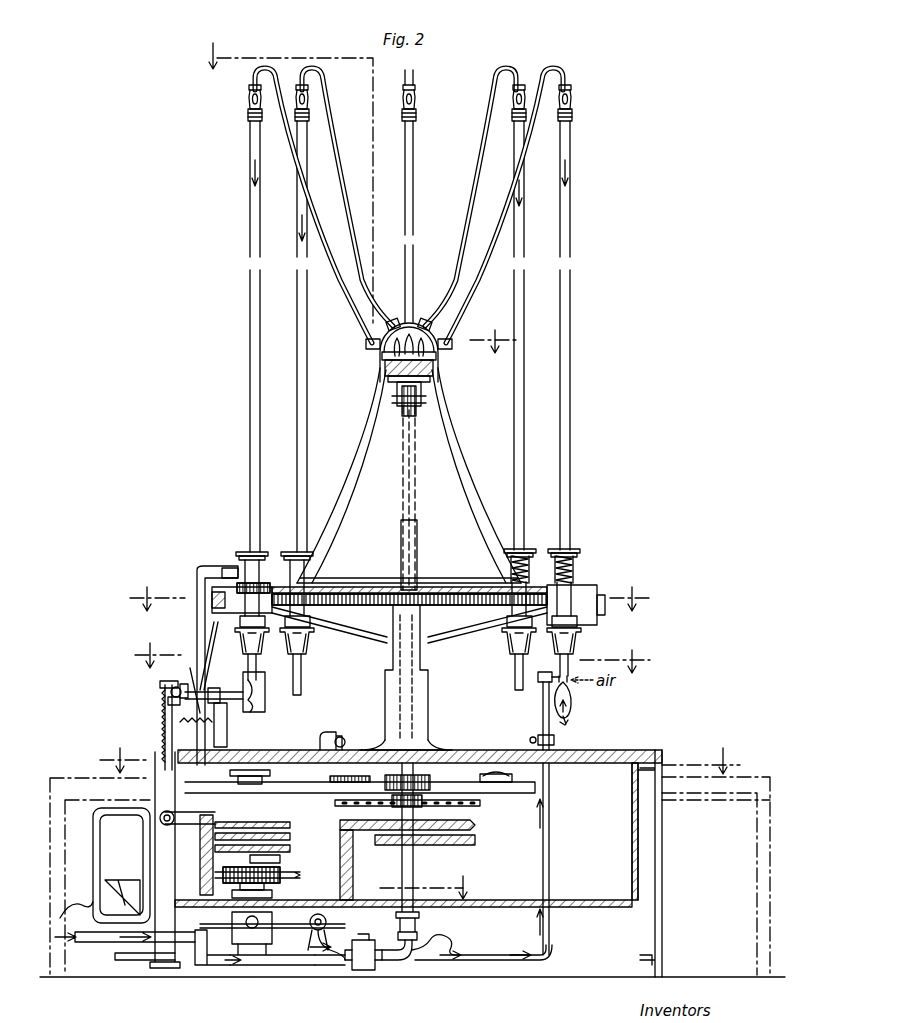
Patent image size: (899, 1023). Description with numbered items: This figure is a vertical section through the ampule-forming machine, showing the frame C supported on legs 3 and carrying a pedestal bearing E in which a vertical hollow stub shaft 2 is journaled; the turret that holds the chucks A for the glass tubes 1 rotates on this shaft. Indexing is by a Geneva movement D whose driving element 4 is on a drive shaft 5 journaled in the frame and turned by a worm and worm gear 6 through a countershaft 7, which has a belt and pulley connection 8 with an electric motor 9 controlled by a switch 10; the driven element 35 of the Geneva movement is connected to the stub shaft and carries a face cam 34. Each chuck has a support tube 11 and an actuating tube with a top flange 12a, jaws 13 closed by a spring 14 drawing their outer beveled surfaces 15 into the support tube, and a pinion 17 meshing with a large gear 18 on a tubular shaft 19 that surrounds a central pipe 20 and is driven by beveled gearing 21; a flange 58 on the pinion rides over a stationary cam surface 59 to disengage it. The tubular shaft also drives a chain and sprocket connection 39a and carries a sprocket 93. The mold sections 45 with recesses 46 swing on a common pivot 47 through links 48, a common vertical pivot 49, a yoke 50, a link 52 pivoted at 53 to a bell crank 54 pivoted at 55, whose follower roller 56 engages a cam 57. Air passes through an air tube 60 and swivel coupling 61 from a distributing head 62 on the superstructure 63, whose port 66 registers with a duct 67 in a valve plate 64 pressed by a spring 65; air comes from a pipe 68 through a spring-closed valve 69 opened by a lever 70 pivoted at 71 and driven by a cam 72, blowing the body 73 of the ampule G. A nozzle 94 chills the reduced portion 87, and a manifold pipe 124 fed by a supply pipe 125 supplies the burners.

The glass tube 1 is at (239, 404).
The vertical hollow stub shaft 2 is at (388, 652).
The legs 3 is at (683, 925).
The driving element 4 is at (395, 712).
The drive shaft 5 is at (410, 861).
The worm and worm gear 6 is at (282, 870).
The countershaft 7 is at (272, 893).
The belt and pulley connection 8 is at (208, 825).
The electric motor 9 is at (100, 862).
The switch 10 is at (150, 790).
The support tube 11 is at (405, 341).
The top flange 12a is at (232, 552).
The jaws 13 is at (240, 650).
The spring 14 is at (240, 554).
The outer beveled surfaces 15 is at (597, 592).
The pinion 17 is at (205, 585).
The large gear 18 is at (465, 628).
The vertical tubular shaft 19 is at (382, 572).
The pipe 20 is at (418, 562).
The beveled gearing 21 is at (362, 845).
The face cam 34 is at (492, 770).
The driven element 35 is at (508, 790).
The chain and sprocket connection 39a is at (470, 845).
The mold sections 45 is at (300, 700).
The recesses 46 is at (262, 690).
The common pivot 47 is at (212, 640).
The links 48 is at (205, 665).
The common vertical pivot 49 is at (188, 672).
The yoke 50 is at (180, 700).
The link 52 is at (167, 700).
The pivot 53 is at (170, 690).
The bell crank 54 is at (163, 745).
The pivot 55 is at (165, 818).
The follower roller 56 is at (255, 822).
The cam 57 is at (290, 826).
The flange 58 is at (245, 552).
The stationary cam surface 59 is at (196, 568).
The air tube 60 is at (325, 196).
The swivel coupling 61 is at (248, 120).
The distributing head 62 is at (366, 343).
The superstructure 63 is at (463, 398).
The valve plate 64 is at (433, 368).
The spring 65 is at (397, 395).
The port 66 is at (382, 356).
The duct 67 is at (388, 379).
The pipe 68 is at (405, 965).
The spring-closed valve 69 is at (110, 940).
The lever 70 is at (330, 948).
The pivot 71 is at (316, 948).
The cam 72 is at (245, 946).
The body 73 is at (590, 700).
The reduced portion 87 is at (538, 677).
The sprocket 93 is at (482, 808).
The nozzle 94 is at (538, 690).
The manifold pipe 124 is at (352, 738).
The supply pipe 125 is at (122, 960).
The holders or chucks A is at (230, 637).
The frame C is at (628, 745).
The Geneva movement D is at (246, 768).
The pedestal bearing E is at (430, 720).
The ampule G is at (567, 726).